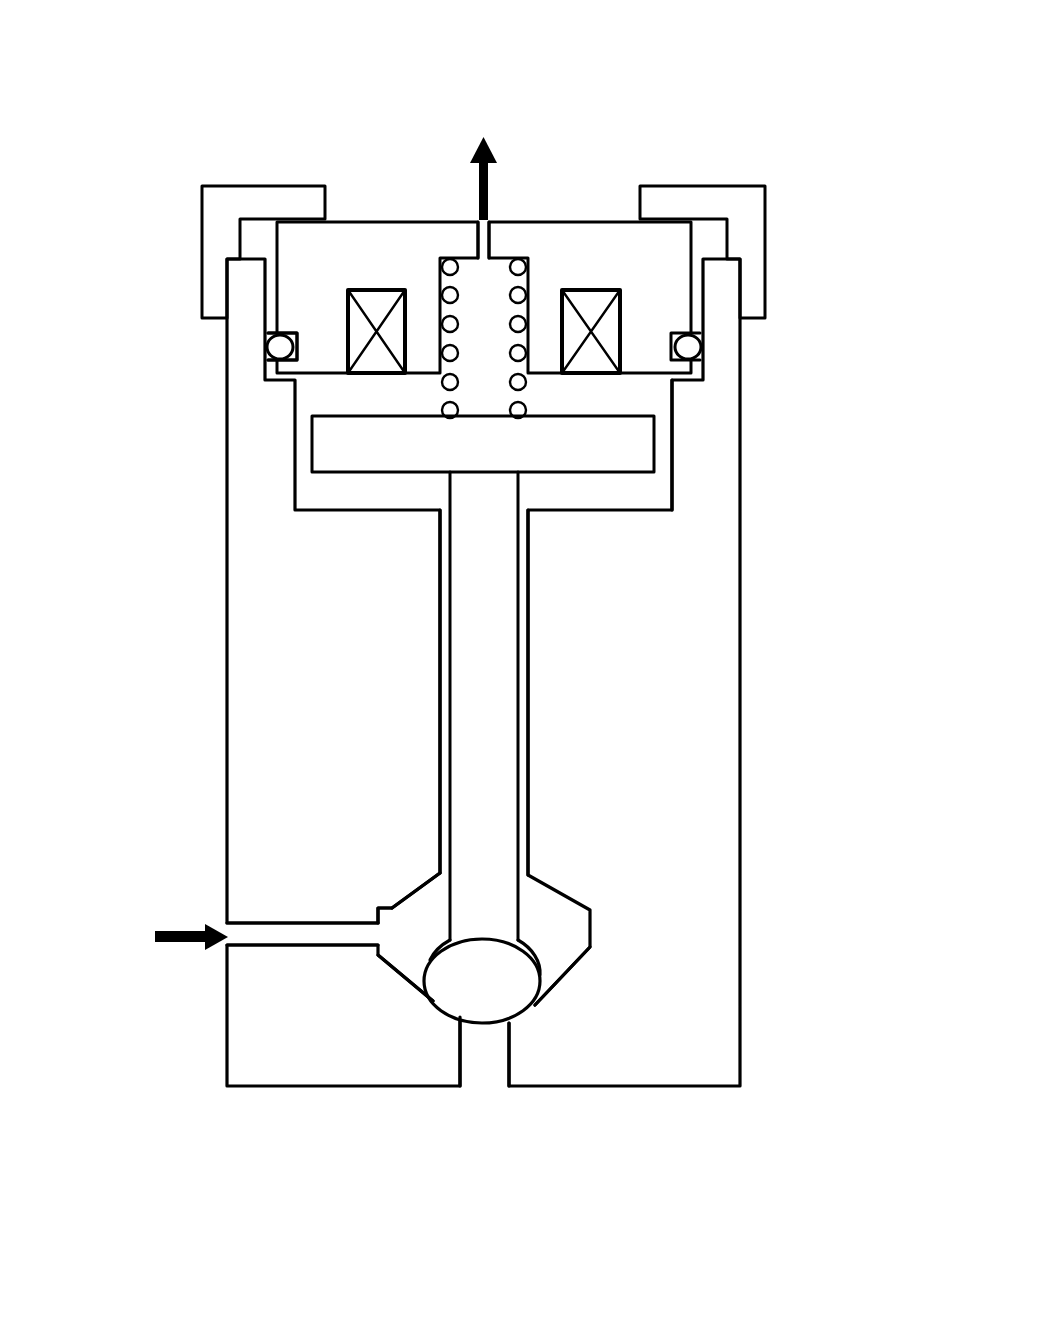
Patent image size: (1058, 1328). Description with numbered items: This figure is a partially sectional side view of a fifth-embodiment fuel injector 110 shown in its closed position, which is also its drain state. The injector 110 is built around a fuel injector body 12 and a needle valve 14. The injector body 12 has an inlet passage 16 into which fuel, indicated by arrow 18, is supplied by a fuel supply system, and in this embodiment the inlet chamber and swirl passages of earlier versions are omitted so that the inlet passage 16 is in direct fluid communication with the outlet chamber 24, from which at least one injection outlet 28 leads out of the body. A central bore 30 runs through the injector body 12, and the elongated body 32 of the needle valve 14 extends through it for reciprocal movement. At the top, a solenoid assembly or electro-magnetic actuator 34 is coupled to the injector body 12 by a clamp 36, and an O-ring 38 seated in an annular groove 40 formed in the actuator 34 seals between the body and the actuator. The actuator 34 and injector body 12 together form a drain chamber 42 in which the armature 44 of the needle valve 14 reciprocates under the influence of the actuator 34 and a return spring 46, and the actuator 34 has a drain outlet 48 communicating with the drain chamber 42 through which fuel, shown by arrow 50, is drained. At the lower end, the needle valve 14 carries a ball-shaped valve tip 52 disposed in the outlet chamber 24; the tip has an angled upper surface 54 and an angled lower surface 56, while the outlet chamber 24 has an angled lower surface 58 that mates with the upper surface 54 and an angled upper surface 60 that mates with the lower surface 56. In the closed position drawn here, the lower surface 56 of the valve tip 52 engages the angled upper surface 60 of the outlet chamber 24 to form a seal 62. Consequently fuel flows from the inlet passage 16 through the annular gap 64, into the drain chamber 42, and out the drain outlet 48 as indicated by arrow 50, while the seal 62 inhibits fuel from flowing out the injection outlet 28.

The fuel injector 110 is at (762, 146).
The fuel injector body 12 is at (205, 523).
The needle valve 14 is at (504, 545).
The inlet passage 16 is at (236, 928).
The fuel 18 is at (212, 938).
The outlet chamber 24 is at (390, 920).
The injection outlet 28 is at (478, 1062).
The central bore 30 is at (525, 623).
The elongated body 32 is at (478, 678).
The electro-magnetic actuator 34 is at (362, 210).
The clamp 36 is at (198, 203).
The O-ring 38 is at (265, 348).
The annular groove 40 is at (292, 334).
The drain chamber 42 is at (662, 497).
The armature 44 is at (658, 447).
The return spring 46 is at (522, 381).
The drain outlet 48 is at (486, 240).
The fuel 50 is at (471, 158).
The valve tip 52 is at (552, 960).
The angled upper surface 54 is at (440, 944).
The angled lower surface 56 is at (458, 1013).
The angled lower surface 58 is at (394, 904).
The angled upper surface 60 is at (455, 1013).
The seal 62 is at (430, 997).
The annular gap 64 is at (445, 660).